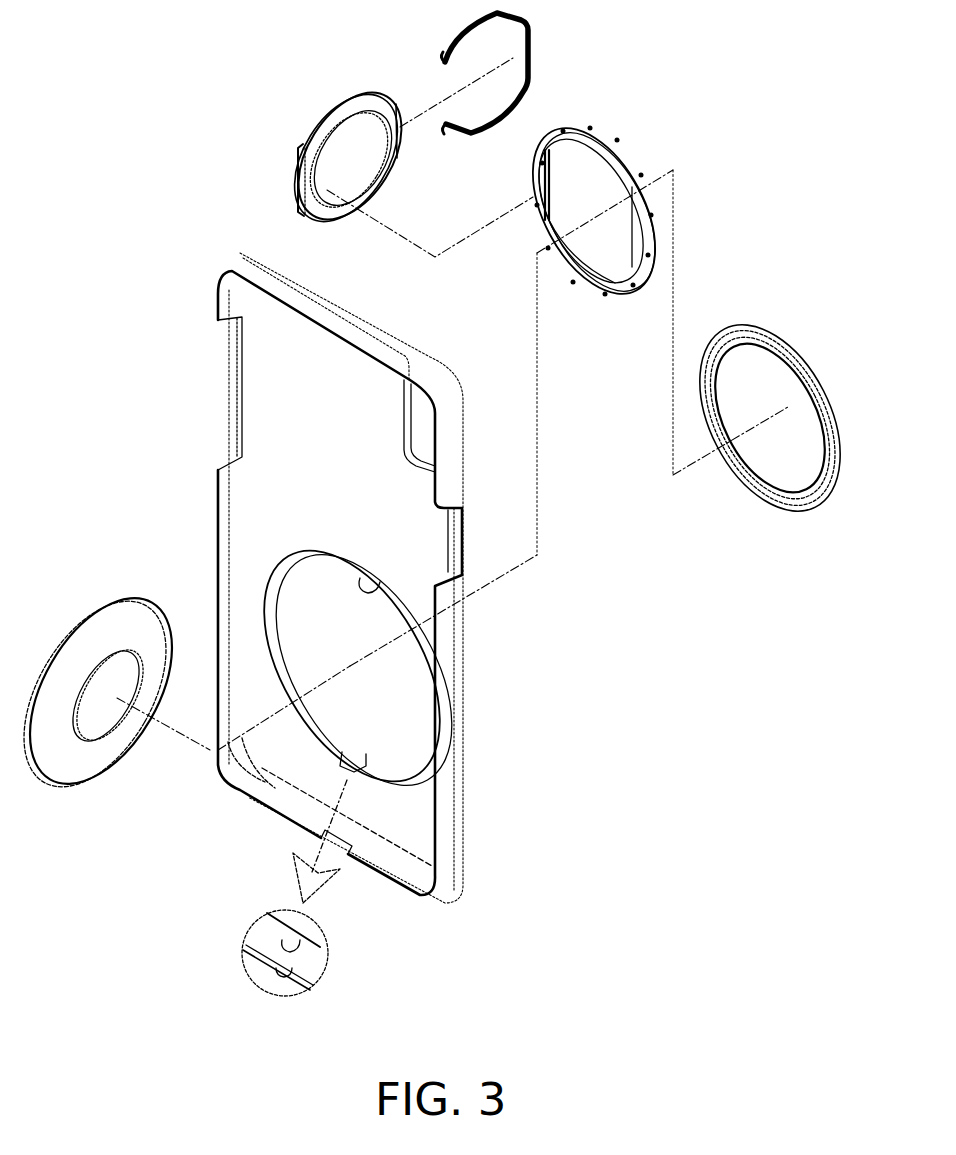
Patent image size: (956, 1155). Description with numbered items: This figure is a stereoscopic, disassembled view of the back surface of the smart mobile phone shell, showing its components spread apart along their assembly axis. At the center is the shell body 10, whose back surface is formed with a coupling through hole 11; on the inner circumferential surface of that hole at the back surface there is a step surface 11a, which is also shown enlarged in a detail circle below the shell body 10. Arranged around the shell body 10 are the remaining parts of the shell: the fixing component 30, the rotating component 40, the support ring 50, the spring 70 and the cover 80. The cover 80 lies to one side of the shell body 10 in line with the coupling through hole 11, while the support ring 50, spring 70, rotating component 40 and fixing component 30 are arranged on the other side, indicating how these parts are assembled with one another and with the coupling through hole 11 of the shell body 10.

The shell body 10 is at (462, 815).
The coupling through hole 11 is at (378, 578).
The step surface 11a is at (280, 990).
The fixing component 30 is at (762, 505).
The rotating component 40 is at (598, 147).
The support ring 50 is at (298, 180).
The spring 70 is at (530, 44).
The cover 80 is at (110, 610).